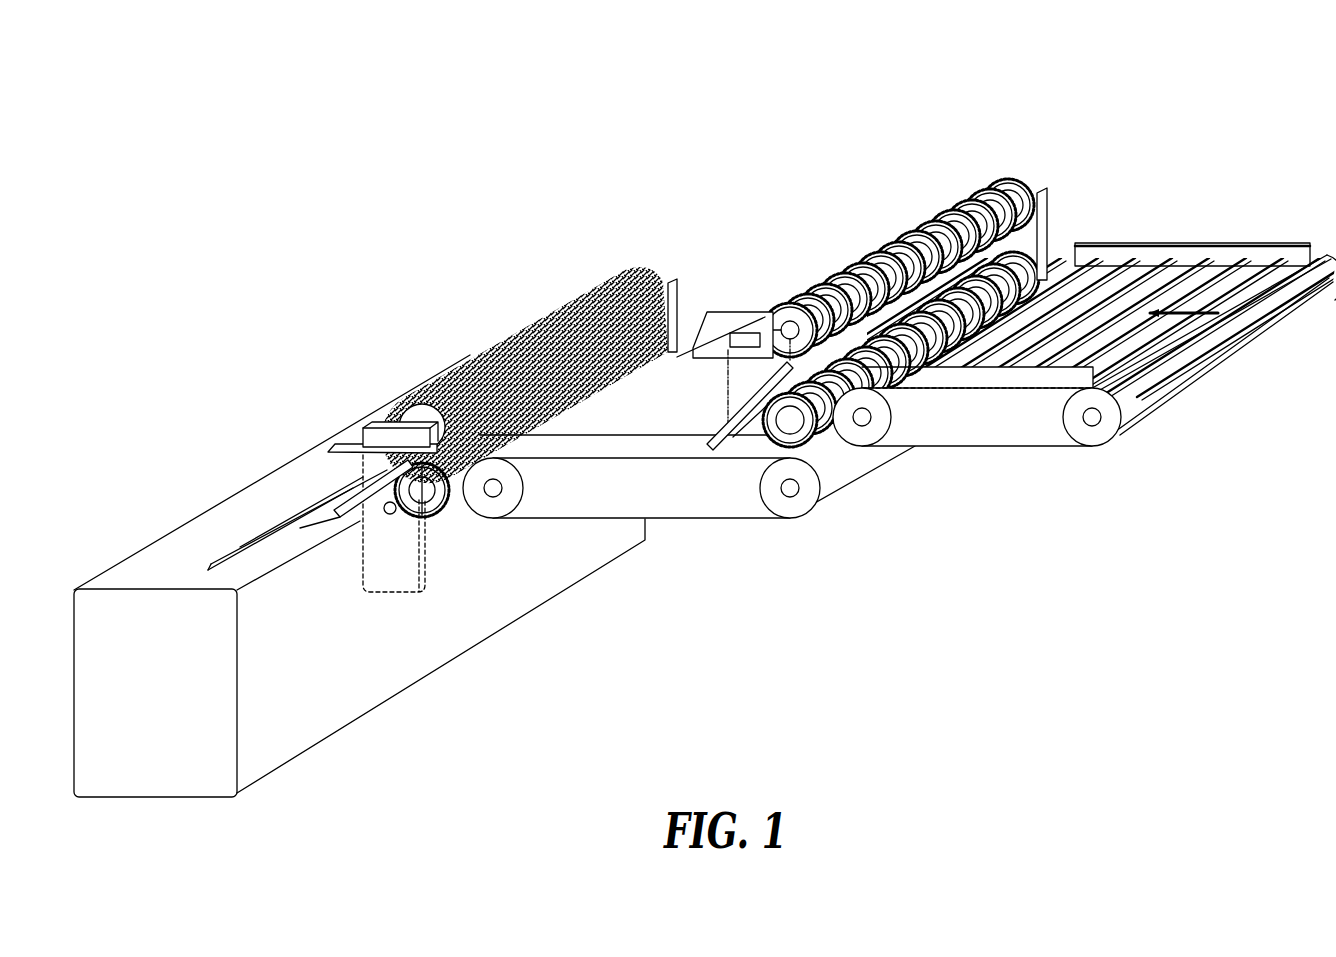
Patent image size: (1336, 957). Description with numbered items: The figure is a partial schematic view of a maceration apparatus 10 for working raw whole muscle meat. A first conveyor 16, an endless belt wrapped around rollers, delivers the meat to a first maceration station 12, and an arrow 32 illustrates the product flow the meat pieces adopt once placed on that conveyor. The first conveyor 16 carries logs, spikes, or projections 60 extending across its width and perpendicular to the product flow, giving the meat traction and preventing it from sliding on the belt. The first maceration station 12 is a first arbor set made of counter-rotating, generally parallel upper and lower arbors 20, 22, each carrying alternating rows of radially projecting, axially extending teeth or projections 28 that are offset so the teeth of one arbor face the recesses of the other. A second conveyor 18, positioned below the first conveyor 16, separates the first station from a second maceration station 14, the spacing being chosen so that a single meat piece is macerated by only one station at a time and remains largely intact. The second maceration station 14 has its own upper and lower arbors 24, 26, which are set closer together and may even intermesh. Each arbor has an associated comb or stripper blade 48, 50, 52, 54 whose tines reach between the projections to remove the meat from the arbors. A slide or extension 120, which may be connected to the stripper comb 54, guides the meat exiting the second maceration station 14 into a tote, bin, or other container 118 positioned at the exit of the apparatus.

The maceration apparatus 10 is at (1147, 103).
The first maceration station 12 is at (914, 271).
The second maceration station 14 is at (587, 278).
The first conveyor 16 is at (977, 277).
The second conveyor 18 is at (648, 418).
The upper arbor 20 is at (786, 318).
The lower arbor 22 is at (815, 442).
The upper arbor 24 is at (417, 408).
The lower arbor 26 is at (433, 505).
The projections 28 is at (902, 235).
The arrow 32 is at (1192, 292).
The stripper blade 48 is at (695, 345).
The stripper blade 50 is at (730, 402).
The stripper blade 52 is at (350, 452).
The stripper comb 54 is at (357, 515).
The projections 60 is at (1183, 265).
The container 118 is at (150, 762).
The extension 120 is at (292, 530).